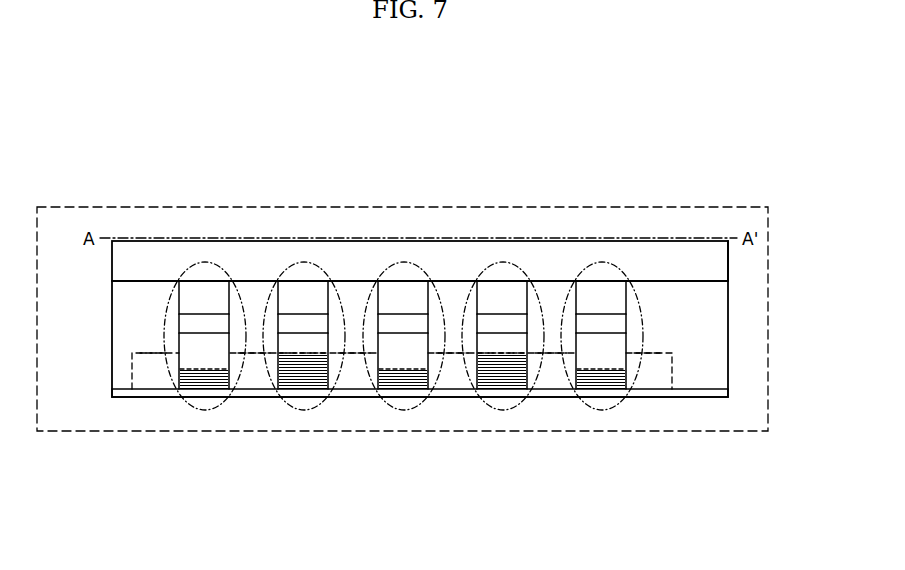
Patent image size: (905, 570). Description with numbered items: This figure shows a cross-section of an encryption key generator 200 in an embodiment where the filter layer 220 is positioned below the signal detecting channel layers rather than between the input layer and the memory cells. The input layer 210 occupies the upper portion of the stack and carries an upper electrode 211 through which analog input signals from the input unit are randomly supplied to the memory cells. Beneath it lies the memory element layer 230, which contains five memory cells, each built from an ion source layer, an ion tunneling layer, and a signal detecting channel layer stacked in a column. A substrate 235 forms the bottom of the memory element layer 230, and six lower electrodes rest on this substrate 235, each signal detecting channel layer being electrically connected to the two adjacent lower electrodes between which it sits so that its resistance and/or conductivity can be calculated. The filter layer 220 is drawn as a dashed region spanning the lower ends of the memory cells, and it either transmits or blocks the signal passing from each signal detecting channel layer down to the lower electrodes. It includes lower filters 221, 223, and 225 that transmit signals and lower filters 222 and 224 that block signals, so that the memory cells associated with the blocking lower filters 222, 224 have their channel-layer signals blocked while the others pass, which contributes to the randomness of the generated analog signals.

The encryption key generator 200 is at (418, 113).
The input layer 210 is at (107, 241).
The upper electrode 211 is at (728, 262).
The filter layer 220 is at (358, 455).
The lower filter 221 is at (197, 383).
The lower filter 222 is at (300, 383).
The lower filter 223 is at (397, 383).
The lower filter 224 is at (495, 383).
The lower filter 225 is at (598, 383).
The memory element layer 230 is at (107, 281).
The substrate 235 is at (707, 393).